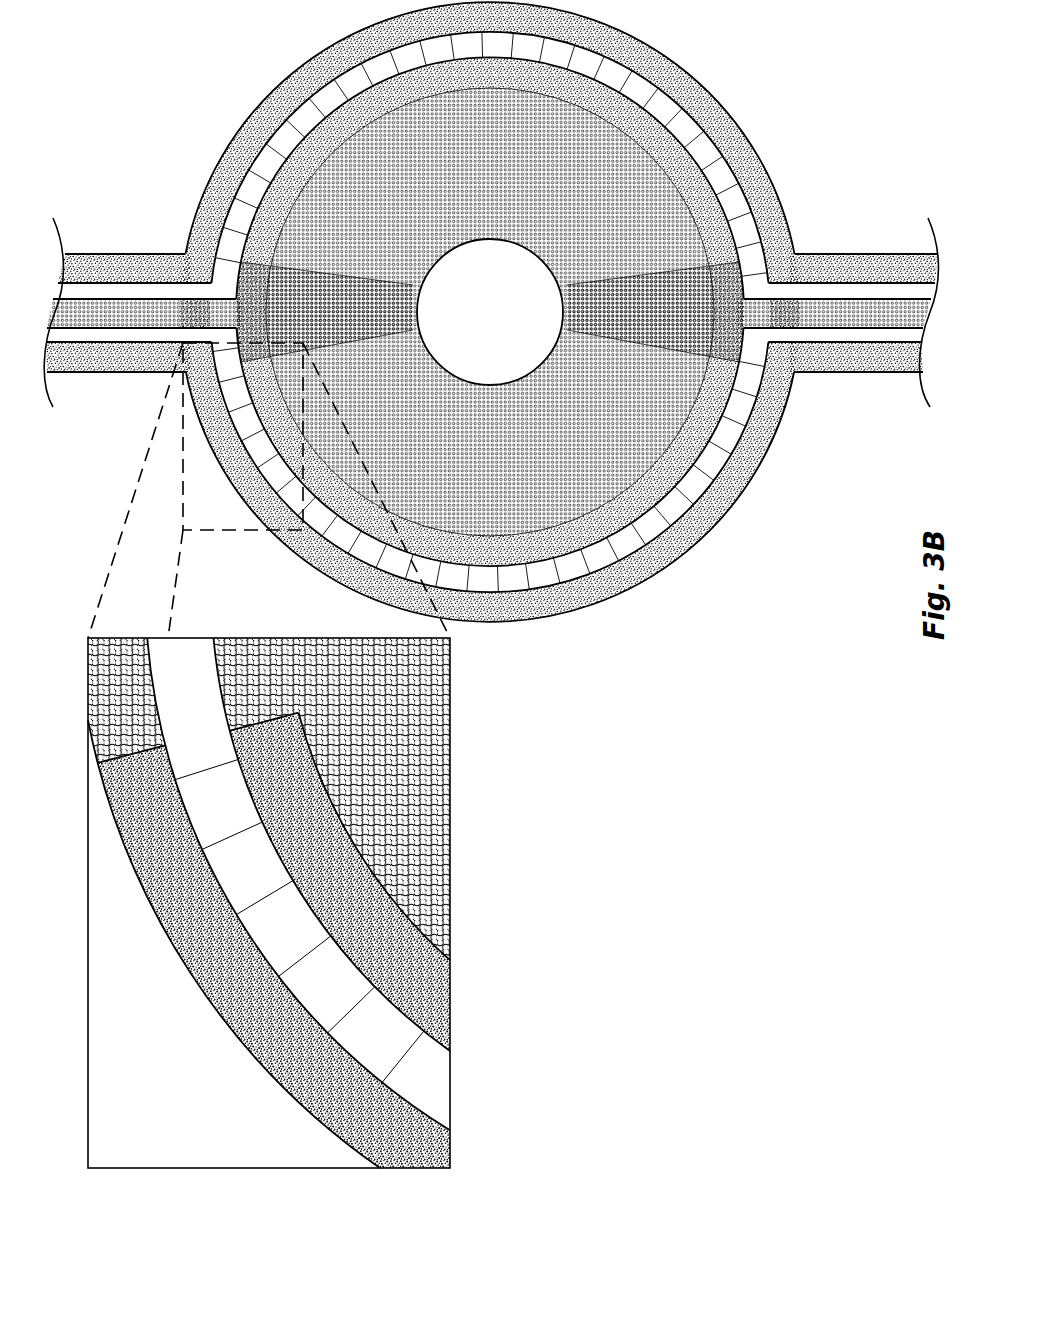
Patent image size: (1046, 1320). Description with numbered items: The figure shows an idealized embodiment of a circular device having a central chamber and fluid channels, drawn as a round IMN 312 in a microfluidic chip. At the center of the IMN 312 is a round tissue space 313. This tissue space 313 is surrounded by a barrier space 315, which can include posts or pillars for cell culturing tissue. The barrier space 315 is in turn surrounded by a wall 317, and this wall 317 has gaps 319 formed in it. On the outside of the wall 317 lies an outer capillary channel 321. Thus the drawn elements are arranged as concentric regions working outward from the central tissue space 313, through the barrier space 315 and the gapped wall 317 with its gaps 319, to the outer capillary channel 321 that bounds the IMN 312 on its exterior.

The IMN 312 is at (672, 580).
The tissue space 313 is at (522, 350).
The barrier space 315 is at (553, 510).
The wall 317 is at (522, 580).
The gaps 319 is at (438, 577).
The outer capillary channel 321 is at (713, 520).